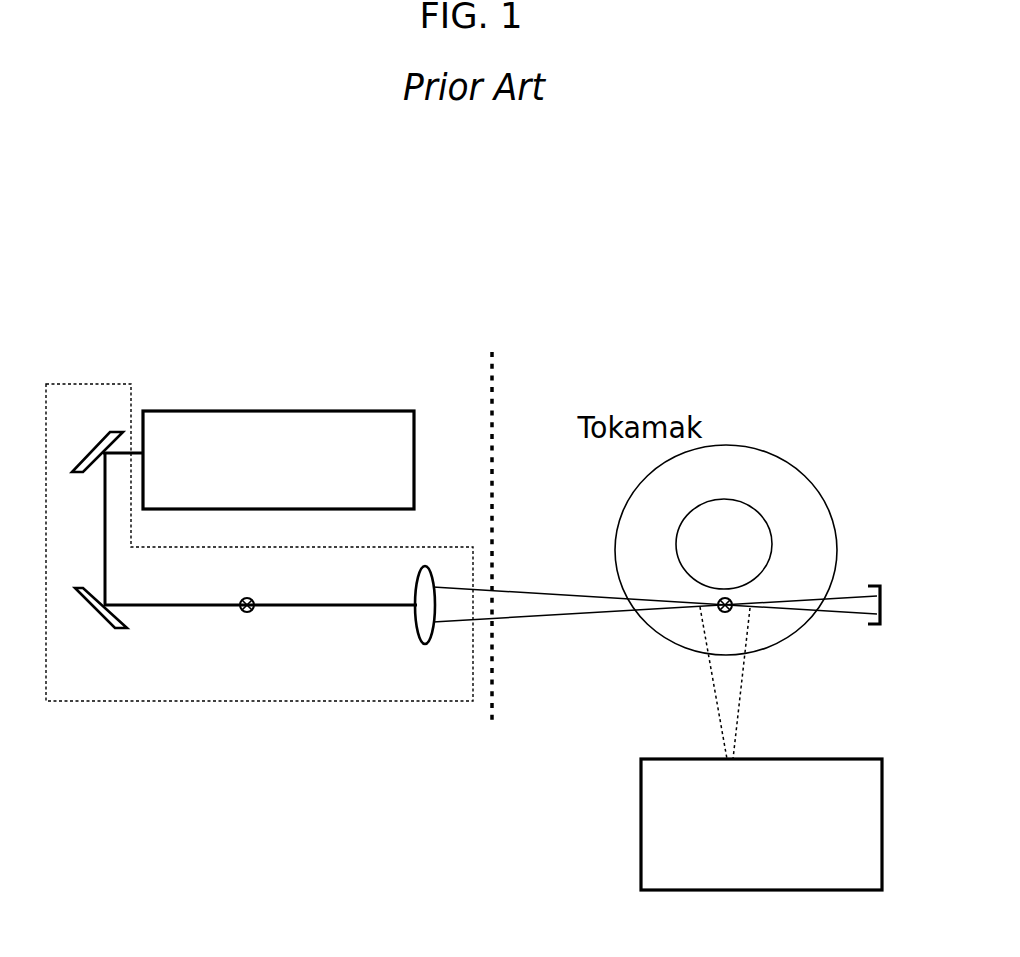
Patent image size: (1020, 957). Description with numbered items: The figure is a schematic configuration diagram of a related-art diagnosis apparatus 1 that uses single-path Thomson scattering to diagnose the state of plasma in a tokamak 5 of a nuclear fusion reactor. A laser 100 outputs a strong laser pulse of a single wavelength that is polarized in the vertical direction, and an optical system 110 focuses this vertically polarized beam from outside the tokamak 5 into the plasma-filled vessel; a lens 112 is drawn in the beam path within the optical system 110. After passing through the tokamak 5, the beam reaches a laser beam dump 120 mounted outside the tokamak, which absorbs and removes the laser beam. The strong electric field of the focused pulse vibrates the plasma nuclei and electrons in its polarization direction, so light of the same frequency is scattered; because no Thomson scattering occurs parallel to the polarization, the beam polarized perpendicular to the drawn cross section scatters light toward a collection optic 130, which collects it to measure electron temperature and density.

The diagnosis apparatus 1 is at (560, 310).
The tokamak 5 is at (762, 450).
The laser 100 is at (313, 411).
The optical system 110 is at (327, 702).
The focusing lens 112 is at (427, 645).
The laser beam dump 120 is at (878, 628).
The collection optic 130 is at (641, 815).